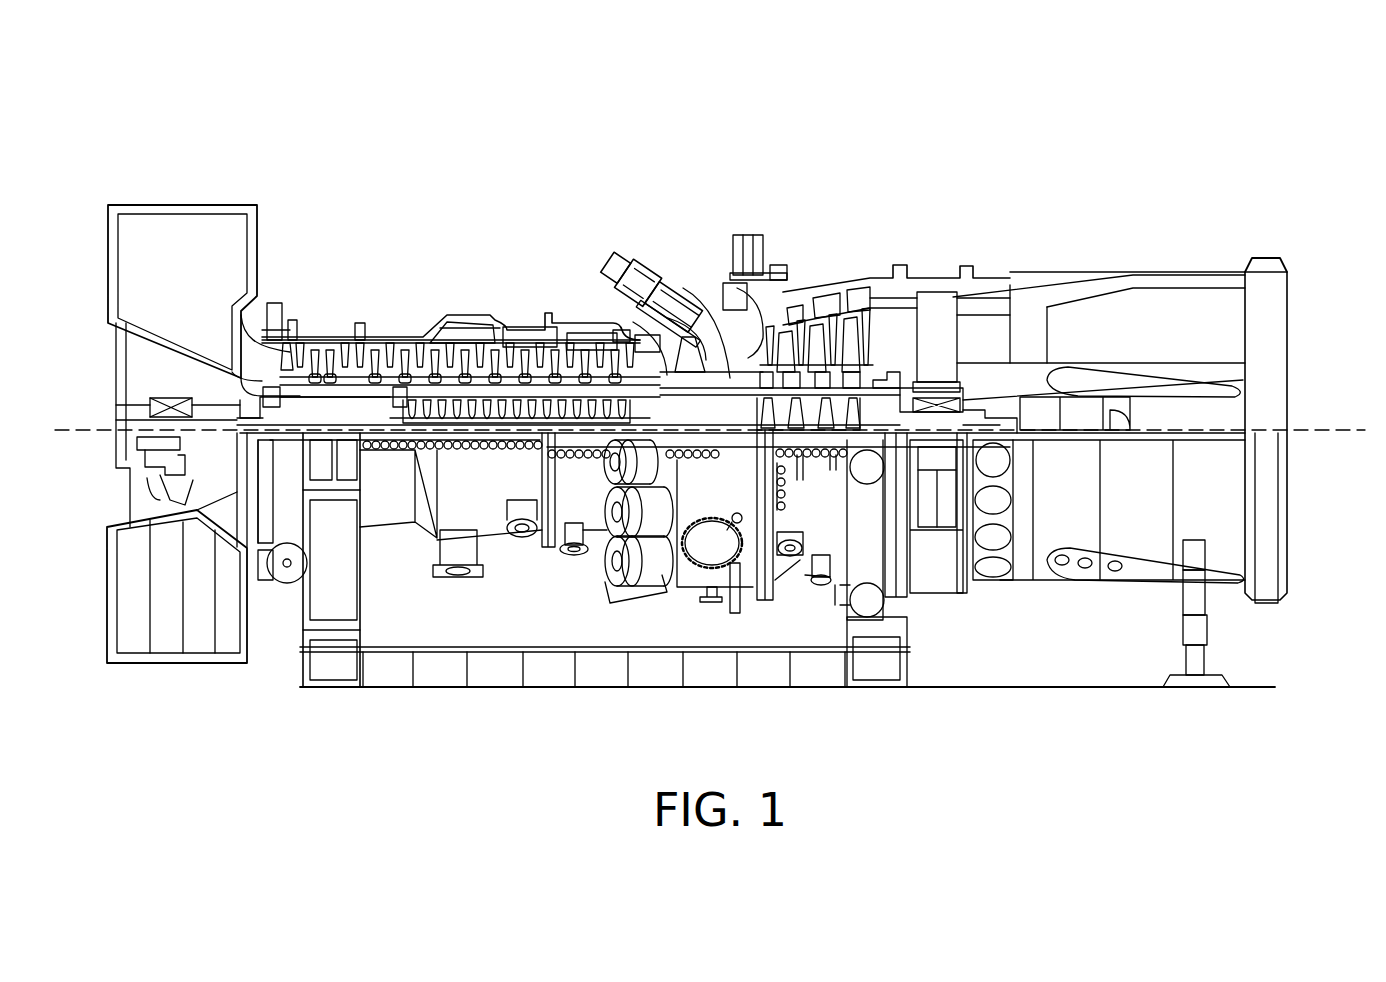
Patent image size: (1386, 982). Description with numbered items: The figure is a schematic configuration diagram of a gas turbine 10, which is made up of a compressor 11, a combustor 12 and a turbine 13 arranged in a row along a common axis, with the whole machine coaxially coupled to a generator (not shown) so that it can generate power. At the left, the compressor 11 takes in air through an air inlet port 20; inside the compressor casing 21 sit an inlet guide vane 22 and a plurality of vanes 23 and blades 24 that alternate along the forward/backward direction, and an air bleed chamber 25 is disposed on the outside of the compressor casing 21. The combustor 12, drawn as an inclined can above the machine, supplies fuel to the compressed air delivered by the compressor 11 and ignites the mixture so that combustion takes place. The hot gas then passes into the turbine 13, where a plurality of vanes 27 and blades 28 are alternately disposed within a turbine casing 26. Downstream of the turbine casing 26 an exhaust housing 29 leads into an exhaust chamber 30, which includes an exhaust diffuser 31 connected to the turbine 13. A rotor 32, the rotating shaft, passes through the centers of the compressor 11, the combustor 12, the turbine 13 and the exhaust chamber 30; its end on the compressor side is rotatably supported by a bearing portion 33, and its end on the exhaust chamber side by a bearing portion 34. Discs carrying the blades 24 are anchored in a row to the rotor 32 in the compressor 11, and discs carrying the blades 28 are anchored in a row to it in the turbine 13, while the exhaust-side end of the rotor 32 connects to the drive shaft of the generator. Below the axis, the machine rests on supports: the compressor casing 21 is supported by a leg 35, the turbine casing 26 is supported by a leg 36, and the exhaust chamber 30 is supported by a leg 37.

The gas turbine 10 is at (650, 148).
The compressor 11 is at (337, 296).
The combustor 12 is at (638, 244).
The turbine 13 is at (907, 257).
The air inlet port 20 is at (122, 268).
The compressor casing 21 is at (330, 355).
The inlet guide vane 22 is at (288, 355).
The vanes 23 is at (345, 345).
The blades 24 is at (313, 355).
The air bleed chamber 25 is at (465, 327).
The turbine casing 26 is at (840, 305).
The vanes 27 is at (810, 300).
The blades 28 is at (734, 295).
The exhaust housing 29 is at (937, 275).
The exhaust chamber 30 is at (1200, 270).
The exhaust diffuser 31 is at (985, 297).
The rotor 32 is at (665, 360).
The bearing portion 33 is at (150, 410).
The bearing portion 34 is at (1245, 375).
The leg 35 is at (305, 610).
The leg 36 is at (898, 607).
The leg 37 is at (1210, 628).